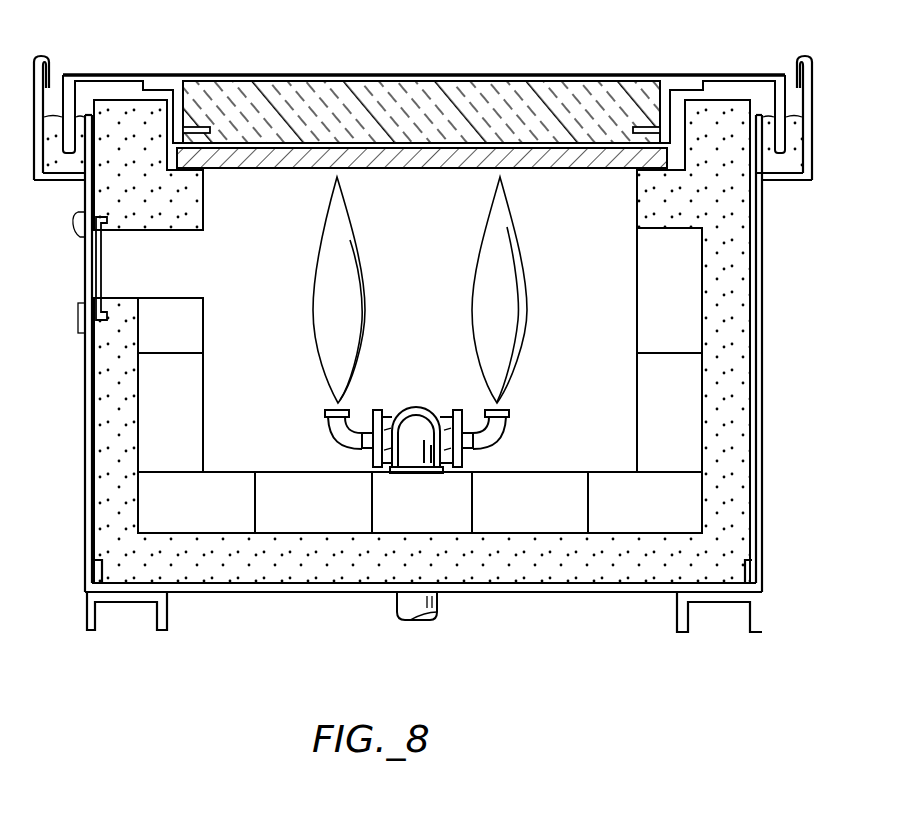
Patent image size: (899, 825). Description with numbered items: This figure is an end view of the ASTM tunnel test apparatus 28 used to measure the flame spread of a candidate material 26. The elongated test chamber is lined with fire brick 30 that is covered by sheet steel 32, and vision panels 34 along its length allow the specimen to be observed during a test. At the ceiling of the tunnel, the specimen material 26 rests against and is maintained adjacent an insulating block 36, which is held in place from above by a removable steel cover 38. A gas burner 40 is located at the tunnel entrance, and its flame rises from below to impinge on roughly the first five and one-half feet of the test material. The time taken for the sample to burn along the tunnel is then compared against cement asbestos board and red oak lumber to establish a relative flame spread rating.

The candidate material 26 is at (422, 168).
The lid assembly 28 is at (424, 109).
The fire brick 30 is at (735, 272).
The sheet steel 32 is at (762, 372).
The vision panel 34 is at (99, 272).
The insulating block 36 is at (387, 84).
The removable steel cover 38 is at (497, 73).
The gas burner 40 is at (423, 410).